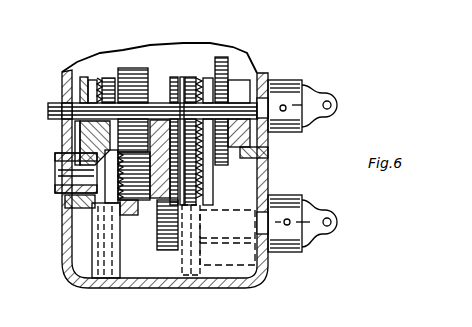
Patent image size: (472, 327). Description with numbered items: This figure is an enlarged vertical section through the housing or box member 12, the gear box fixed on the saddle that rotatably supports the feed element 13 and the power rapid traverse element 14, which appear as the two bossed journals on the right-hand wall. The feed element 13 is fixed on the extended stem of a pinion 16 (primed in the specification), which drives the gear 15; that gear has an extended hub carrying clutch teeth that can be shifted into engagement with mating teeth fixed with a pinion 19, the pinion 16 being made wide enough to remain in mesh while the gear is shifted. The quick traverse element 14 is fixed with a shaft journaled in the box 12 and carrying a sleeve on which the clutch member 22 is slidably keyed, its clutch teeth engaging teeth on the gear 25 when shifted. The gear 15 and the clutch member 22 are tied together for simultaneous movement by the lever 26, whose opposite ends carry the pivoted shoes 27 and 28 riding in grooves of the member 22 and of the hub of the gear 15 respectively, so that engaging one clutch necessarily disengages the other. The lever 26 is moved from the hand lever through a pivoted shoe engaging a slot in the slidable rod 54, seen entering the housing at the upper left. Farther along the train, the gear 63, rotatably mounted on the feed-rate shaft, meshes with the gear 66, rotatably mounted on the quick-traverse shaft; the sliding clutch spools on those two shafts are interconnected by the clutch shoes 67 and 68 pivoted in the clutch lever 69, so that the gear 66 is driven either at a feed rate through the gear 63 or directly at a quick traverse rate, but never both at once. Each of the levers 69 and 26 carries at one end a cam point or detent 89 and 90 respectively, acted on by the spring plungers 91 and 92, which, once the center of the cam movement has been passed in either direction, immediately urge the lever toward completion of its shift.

The housing or box member 12 is at (70, 265).
The feed element 13 is at (300, 248).
The power rapid traverse element 14 is at (285, 80).
The gear 15 is at (160, 159).
The pinion 16 is at (165, 234).
The pinion 19 is at (268, 190).
The clutch member 22 is at (173, 77).
The gear 25 is at (222, 57).
The lever 26 is at (191, 77).
The pivoted shoe 27 is at (182, 77).
The pivoted shoe 28 is at (197, 213).
The slidable rod 54 is at (55, 102).
The gear 63 is at (124, 215).
The gear 66 is at (134, 70).
The clutch shoe 67 is at (91, 104).
The clutch shoe 68 is at (68, 202).
The clutch lever 69 is at (76, 148).
The cam point or detent 89 is at (73, 215).
The cam point or detent 90 is at (137, 185).
The spring plunger 91 is at (110, 210).
The spring plunger 92 is at (190, 215).